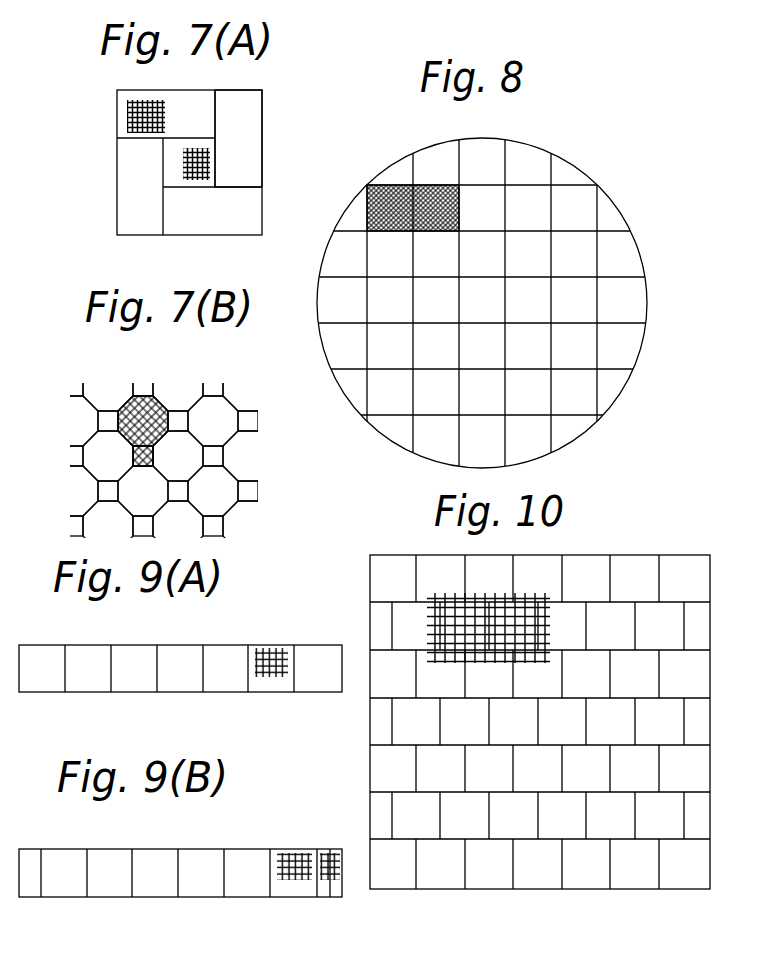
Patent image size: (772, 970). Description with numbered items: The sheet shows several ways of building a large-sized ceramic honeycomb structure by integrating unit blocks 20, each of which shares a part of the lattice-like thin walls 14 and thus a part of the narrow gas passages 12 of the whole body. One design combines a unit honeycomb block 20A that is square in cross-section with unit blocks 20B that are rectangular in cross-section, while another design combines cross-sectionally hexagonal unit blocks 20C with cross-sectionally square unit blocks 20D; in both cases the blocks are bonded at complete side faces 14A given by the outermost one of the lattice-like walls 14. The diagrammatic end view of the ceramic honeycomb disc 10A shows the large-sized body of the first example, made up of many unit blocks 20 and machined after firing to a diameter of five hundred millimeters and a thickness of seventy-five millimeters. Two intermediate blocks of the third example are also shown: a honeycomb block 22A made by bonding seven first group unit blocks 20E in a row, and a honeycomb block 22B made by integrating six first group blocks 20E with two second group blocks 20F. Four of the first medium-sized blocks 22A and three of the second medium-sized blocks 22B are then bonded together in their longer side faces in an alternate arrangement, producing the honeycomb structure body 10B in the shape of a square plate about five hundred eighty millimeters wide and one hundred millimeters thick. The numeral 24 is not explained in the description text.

In FIG. 8, the ceramic honeycomb disc 10A is at (613, 201).
In FIG. 10, the honeycomb structure body 10B is at (366, 569).
In FIG. 9A, the gas passage 12 is at (265, 665).
In FIG. 9B, the gas passage 12 is at (325, 897).
In FIG. 10, the gas passage 12 is at (434, 620).
In FIG. 9A, the lattice-like thin wall 14 is at (280, 662).
In FIG. 9B, the lattice-like thin wall 14 is at (340, 865).
In FIG. 10, the lattice-like thin wall 14 is at (440, 663).
In FIG. 7A, the complete side face 14A is at (215, 148).
In FIG. 7B, the complete side face 14A is at (220, 442).
In FIG. 8, the complete side face 14A is at (415, 248).
In FIG. 9A, the complete side face 14A is at (294, 692).
In FIG. 9B, the complete side face 14A is at (305, 897).
In FIG. 10, the complete side face 14A is at (662, 661).
In FIG. 8, the unit block 20 is at (430, 185).
In FIG. 7A, the square unit honeycomb block 20A is at (172, 163).
In FIG. 7A, the rectangular unit block 20B is at (250, 146).
In FIG. 7B, the hexagonal unit block 20C is at (222, 413).
In FIG. 7B, the square unit block 20D is at (223, 457).
In FIG. 9A, the first group unit block 20E is at (268, 650).
In FIG. 9B, the first group unit block 20E is at (283, 853).
In FIG. 10, the first group unit block 20E is at (647, 830).
In FIG. 9B, the second group block 20F is at (30, 857).
In FIG. 10, the second group block 20F is at (699, 806).
In FIG. 9A, the honeycomb block 22A is at (138, 645).
In FIG. 10, the honeycomb block 22A is at (710, 751).
In FIG. 9B, the honeycomb block 22B is at (176, 897).
In FIG. 10, the honeycomb block 22B is at (710, 815).
In FIG. 9A, the dicing line 24 is at (210, 692).
In FIG. 9B, the dicing line 24 is at (237, 897).
In FIG. 10, the dicing line 24 is at (620, 602).